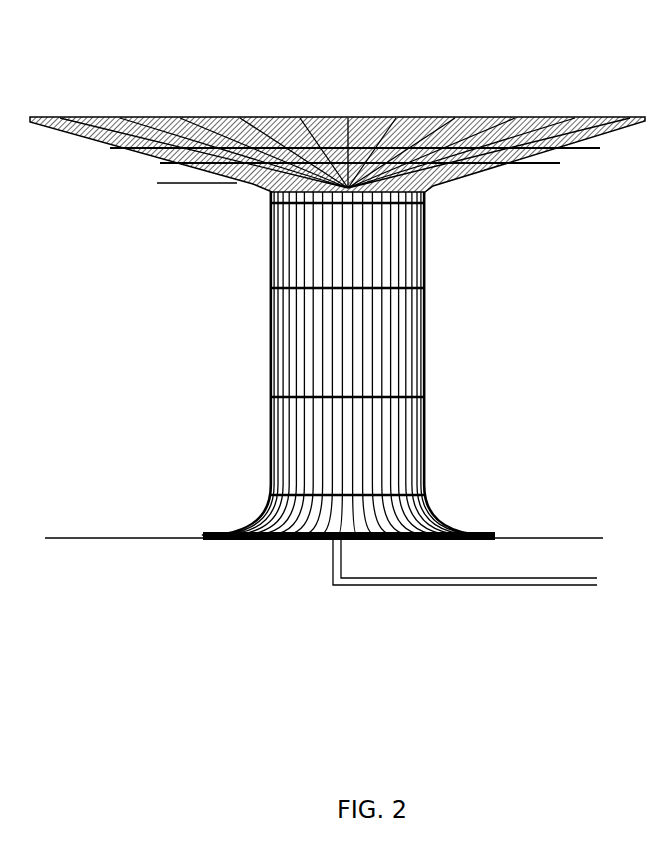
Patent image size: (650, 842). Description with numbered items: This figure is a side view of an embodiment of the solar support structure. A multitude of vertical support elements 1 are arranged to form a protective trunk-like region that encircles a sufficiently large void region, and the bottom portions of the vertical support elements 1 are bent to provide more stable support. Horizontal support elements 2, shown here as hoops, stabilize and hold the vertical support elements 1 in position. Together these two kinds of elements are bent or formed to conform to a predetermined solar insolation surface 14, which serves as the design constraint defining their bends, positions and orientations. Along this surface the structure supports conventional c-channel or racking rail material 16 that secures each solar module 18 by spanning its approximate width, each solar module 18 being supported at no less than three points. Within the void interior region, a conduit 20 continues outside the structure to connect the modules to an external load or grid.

The vertical support element 1 is at (401, 366).
The horizontal support element 2 is at (378, 290).
The solar insolation surface 14 is at (337, 108).
The c-channel or racking rail material 16 is at (523, 128).
The solar module 18 is at (497, 128).
The conduit 20 is at (535, 578).